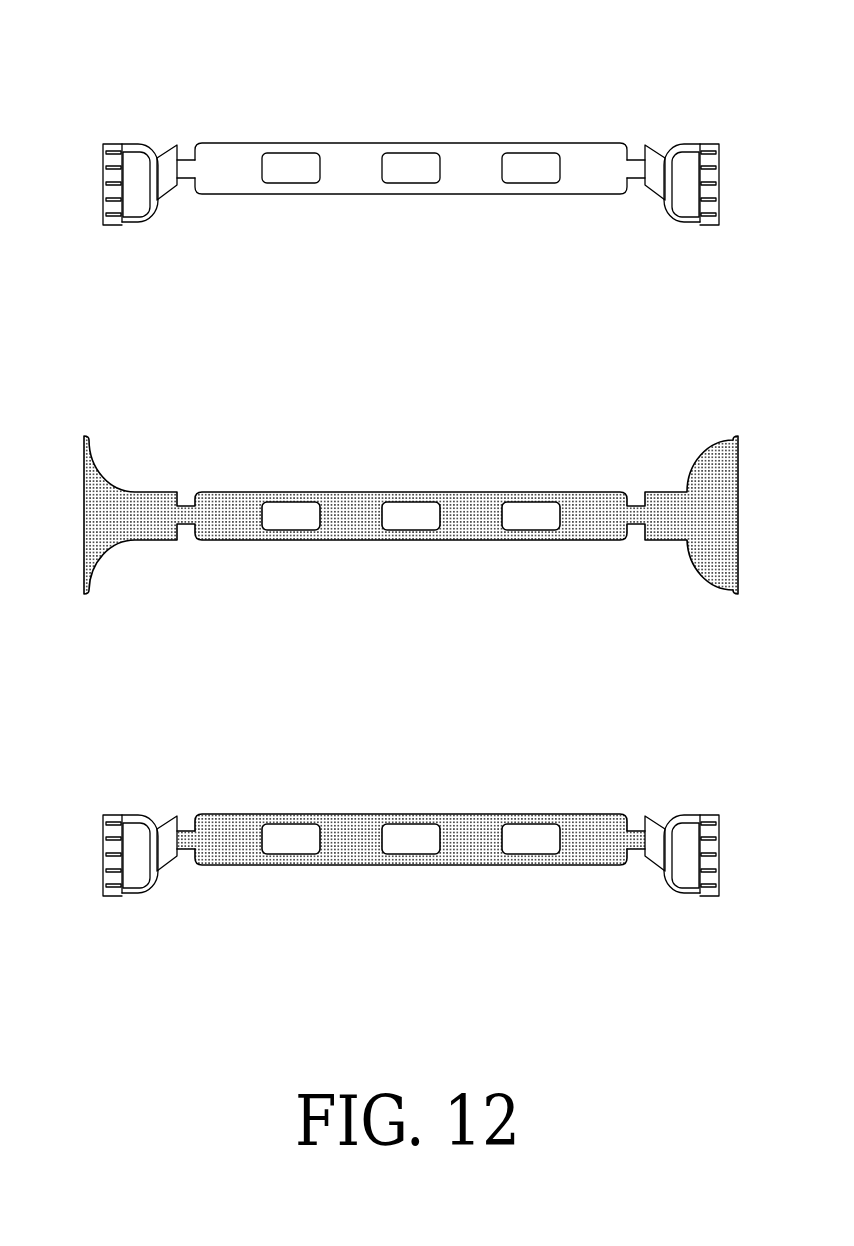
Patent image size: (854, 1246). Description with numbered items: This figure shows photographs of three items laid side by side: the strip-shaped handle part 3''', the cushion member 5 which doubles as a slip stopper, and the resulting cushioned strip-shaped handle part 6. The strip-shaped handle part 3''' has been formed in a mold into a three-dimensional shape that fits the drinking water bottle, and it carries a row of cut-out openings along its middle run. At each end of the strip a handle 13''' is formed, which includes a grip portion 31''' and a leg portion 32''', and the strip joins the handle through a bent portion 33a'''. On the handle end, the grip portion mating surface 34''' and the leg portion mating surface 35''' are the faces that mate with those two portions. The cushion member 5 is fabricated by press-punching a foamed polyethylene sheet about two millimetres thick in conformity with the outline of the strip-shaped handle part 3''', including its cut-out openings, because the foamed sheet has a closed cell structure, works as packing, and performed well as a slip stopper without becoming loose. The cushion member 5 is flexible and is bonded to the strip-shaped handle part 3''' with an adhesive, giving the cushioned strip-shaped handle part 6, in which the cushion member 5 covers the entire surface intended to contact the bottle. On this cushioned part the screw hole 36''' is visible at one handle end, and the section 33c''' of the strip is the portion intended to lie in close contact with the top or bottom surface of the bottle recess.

The strip-shaped handle part 3''' is at (441, 102).
The handle 13''' is at (382, 174).
The bent portion 33a''' is at (666, 96).
The grip portion mating surface 34''' is at (83, 231).
The leg portion mating surface 35''' is at (181, 215).
The leg portion 32''' is at (682, 183).
The grip portion 31''' is at (709, 184).
The cushion member which doubles as slip stopper 5 is at (402, 480).
The cushioned strip-shaped handle part 6 is at (402, 810).
The screw hole 36''' is at (138, 849).
The section of strip intended to be in close contact with recess top surface or rece 33c''' is at (690, 858).